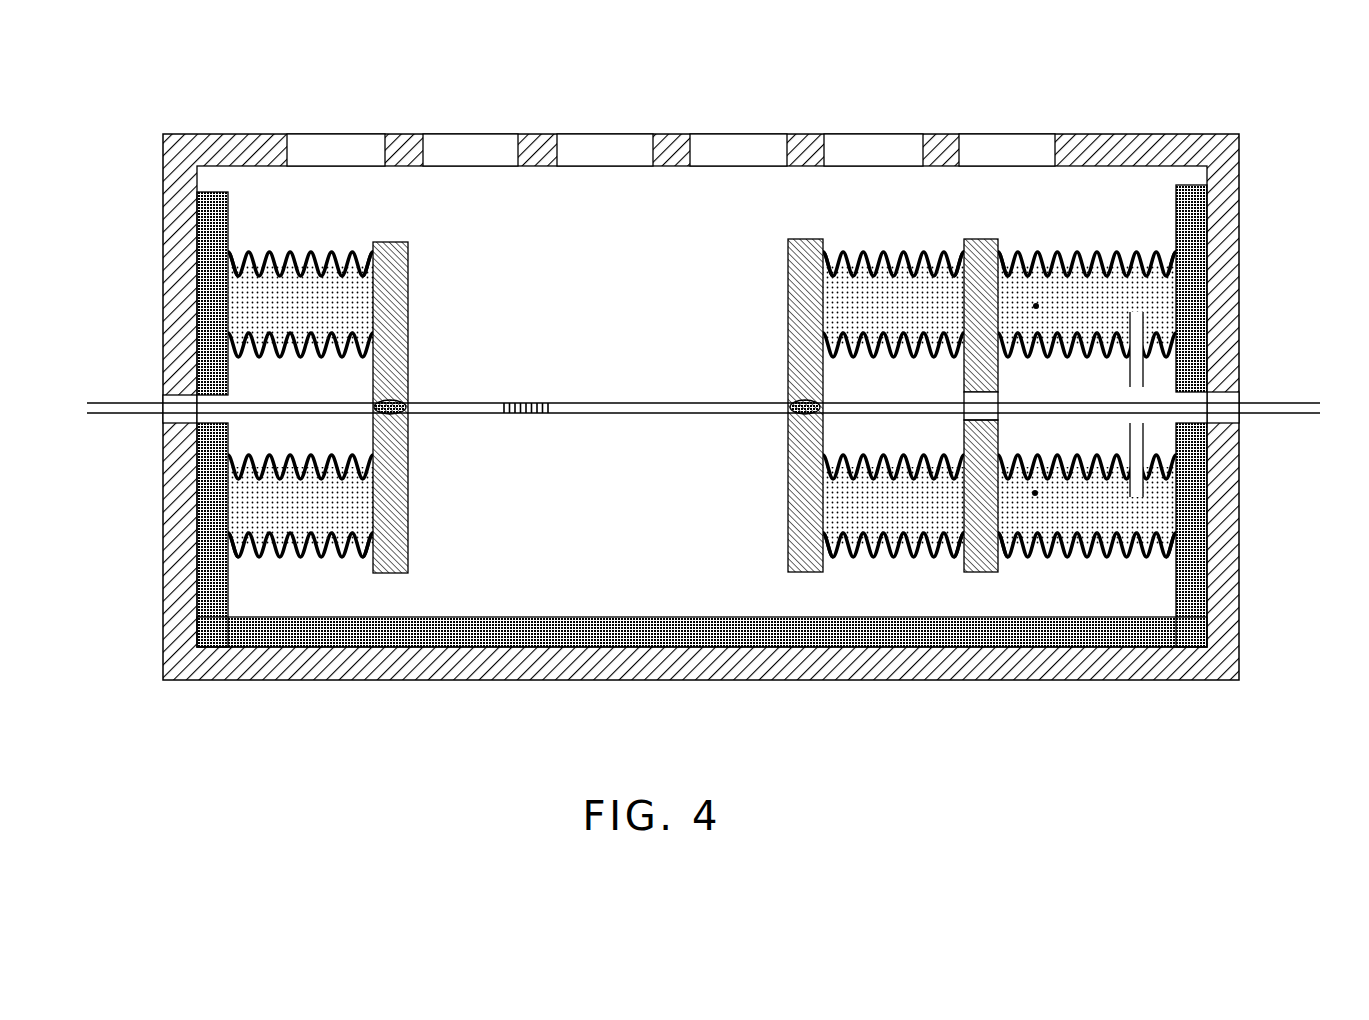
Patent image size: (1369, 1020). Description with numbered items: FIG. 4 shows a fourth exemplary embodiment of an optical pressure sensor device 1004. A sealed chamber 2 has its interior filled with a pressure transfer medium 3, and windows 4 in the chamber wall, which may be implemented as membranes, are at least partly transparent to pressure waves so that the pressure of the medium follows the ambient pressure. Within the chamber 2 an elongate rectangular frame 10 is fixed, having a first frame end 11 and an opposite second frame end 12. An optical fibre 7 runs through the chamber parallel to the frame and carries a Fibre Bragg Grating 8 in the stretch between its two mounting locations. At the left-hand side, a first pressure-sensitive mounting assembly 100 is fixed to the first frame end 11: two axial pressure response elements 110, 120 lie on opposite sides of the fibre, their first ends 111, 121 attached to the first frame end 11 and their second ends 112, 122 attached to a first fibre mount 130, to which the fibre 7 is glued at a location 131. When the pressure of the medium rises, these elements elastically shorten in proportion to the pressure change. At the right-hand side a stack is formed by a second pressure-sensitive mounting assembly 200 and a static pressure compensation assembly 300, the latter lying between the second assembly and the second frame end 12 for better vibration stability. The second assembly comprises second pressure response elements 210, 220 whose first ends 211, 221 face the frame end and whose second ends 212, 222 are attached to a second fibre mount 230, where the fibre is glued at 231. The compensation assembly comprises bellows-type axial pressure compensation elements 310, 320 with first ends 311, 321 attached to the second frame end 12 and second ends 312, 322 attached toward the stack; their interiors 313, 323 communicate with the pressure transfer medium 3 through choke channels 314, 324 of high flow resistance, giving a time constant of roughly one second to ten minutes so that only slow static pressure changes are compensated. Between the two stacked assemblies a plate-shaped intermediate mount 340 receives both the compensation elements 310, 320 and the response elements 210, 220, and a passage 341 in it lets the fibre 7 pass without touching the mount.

The optical pressure sensor device 1004 is at (1260, 101).
The chamber 2 is at (482, 680).
The pressure transfer medium 3 is at (529, 581).
The window 4 is at (730, 134).
The optical fibre 7 is at (638, 401).
The Fibre Bragg Grating 8 is at (504, 391).
The frame 10 is at (590, 630).
The first frame end 11 is at (208, 248).
The second frame end 12 is at (1195, 543).
The first pressure-sensitive mounting assembly 100 is at (298, 728).
The axial pressure response element 110 is at (290, 262).
The first end 111 is at (233, 252).
The second end 112 is at (368, 250).
The axial pressure response element 120 is at (307, 555).
The first end 121 is at (233, 557).
The second end 122 is at (372, 557).
The first fibre mount 130 is at (408, 320).
The glue 131 is at (408, 390).
The second pressure-sensitive mounting assembly 200 is at (893, 728).
The second pressure response element 210 is at (878, 262).
The first end 211 is at (963, 250).
The second end 212 is at (825, 250).
The second pressure response element 220 is at (905, 555).
The first end 221 is at (960, 555).
The second end 222 is at (827, 557).
The second fibre mount 230 is at (787, 335).
The glue 231 is at (787, 387).
The static pressure compensation assembly 300 is at (1085, 728).
The axial pressure compensation element 310 is at (1063, 262).
The first end 311 is at (1175, 250).
The second end 312 is at (1005, 250).
The interior 313 is at (1036, 308).
The choke channel 314 is at (1128, 363).
The axial pressure compensation element 320 is at (1085, 555).
The first end 321 is at (1170, 557).
The second end 322 is at (1007, 557).
The interior 323 is at (1036, 490).
The choke channel 324 is at (1128, 447).
The intermediate mount 340 is at (964, 375).
The passage 341 is at (970, 413).